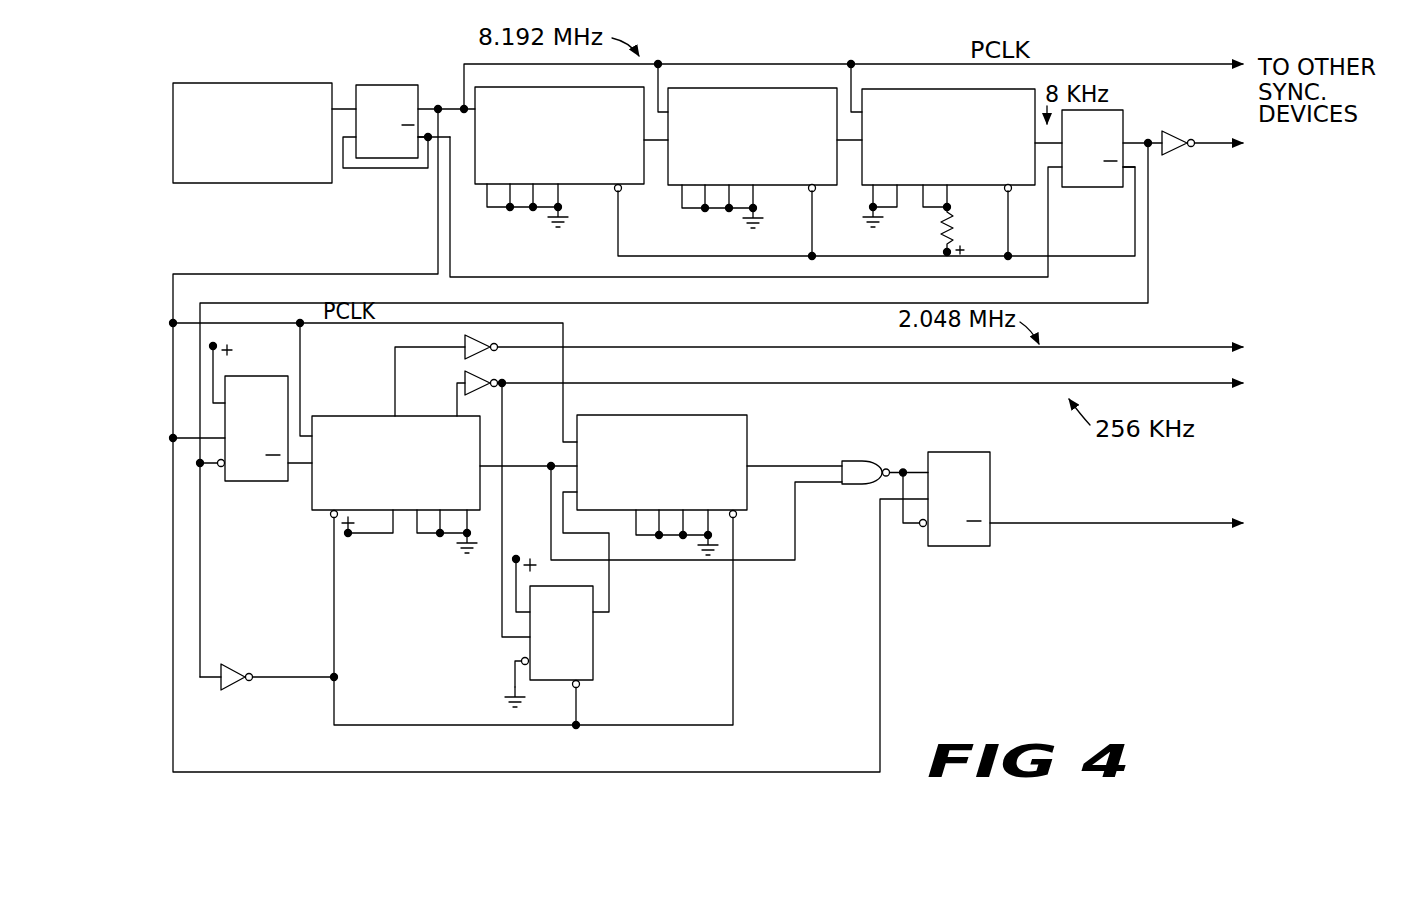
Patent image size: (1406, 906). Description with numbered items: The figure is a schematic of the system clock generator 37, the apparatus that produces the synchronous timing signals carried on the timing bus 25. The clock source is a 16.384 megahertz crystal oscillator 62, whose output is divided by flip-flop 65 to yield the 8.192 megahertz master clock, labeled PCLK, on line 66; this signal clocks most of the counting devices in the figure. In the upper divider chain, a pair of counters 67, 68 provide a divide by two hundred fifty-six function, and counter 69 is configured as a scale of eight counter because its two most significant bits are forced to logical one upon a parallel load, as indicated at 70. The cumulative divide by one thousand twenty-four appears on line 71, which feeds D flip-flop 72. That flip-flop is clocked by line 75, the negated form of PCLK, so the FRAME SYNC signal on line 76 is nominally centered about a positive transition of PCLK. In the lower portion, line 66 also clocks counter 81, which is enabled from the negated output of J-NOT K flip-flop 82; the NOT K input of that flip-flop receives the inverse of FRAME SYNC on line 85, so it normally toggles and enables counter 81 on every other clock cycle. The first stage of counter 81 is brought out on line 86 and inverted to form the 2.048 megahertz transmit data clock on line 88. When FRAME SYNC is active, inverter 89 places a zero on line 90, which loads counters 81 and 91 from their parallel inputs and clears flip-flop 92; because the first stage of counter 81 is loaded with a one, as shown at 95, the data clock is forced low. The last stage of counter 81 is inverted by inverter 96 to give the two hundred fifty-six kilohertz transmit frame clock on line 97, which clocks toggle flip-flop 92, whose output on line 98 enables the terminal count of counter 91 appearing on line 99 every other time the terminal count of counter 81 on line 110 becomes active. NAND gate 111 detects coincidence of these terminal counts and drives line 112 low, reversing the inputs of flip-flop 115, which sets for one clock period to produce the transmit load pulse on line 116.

The timing bus 25 is at (1196, 563).
The system clock generator 37 is at (404, 56).
The 16.384 megahertz crystal oscillator 62 is at (215, 184).
The flip-flop 65 is at (356, 86).
The line 66 is at (456, 108).
The counter 67 is at (630, 192).
The counter 68 is at (769, 190).
The counter 69 is at (858, 192).
The parallel load connection 70 is at (912, 210).
The line 71 is at (1040, 186).
The D flip-flop 72 is at (1123, 110).
The line 75 is at (805, 279).
The line 76 is at (1196, 148).
The counter 81 is at (320, 416).
The J-NOT K flip-flop 82 is at (245, 378).
The line 85 is at (365, 304).
The line 86 is at (395, 386).
The line 88 is at (710, 347).
The inverter 89 is at (497, 351).
The line 90 is at (335, 656).
The counter 91 is at (680, 415).
The flip-flop 92 is at (594, 680).
The parallel load connection 95 is at (362, 538).
The inverter 96 is at (495, 388).
The line 97 is at (642, 370).
The line 98 is at (609, 612).
The line 99 is at (760, 466).
The line 110 is at (502, 470).
The NAND gate 111 is at (852, 461).
The line 112 is at (884, 478).
The flip-flop 115 is at (955, 450).
The line 116 is at (1030, 526).